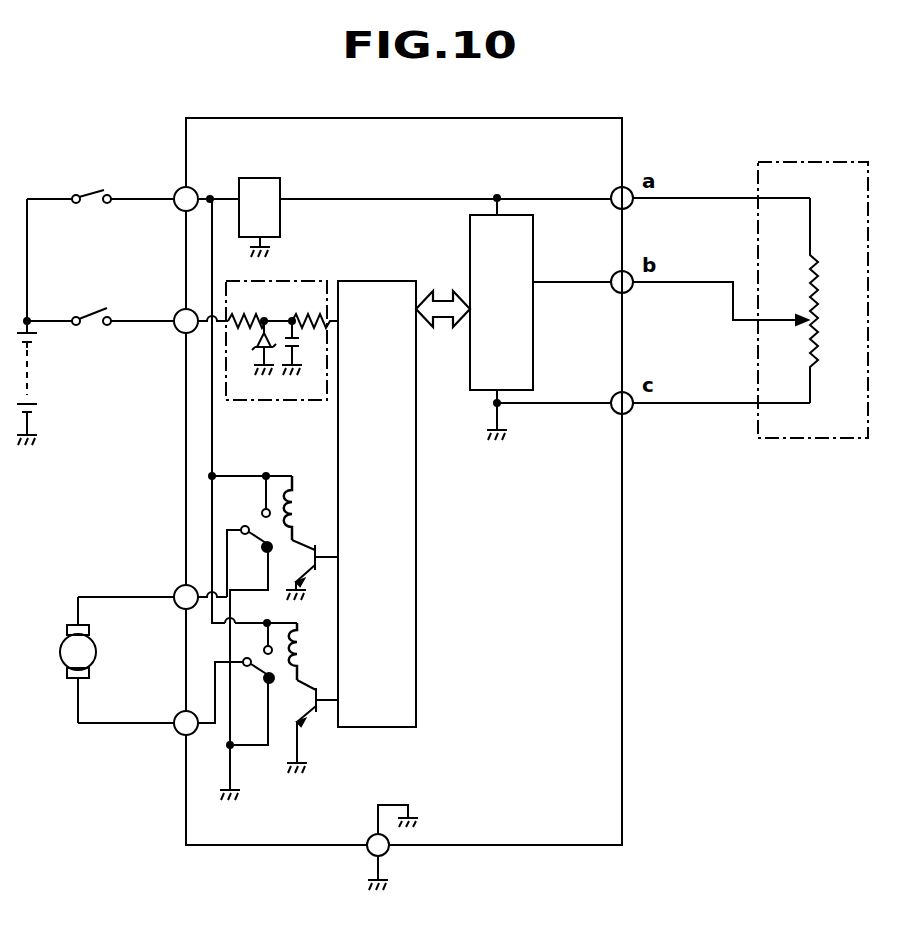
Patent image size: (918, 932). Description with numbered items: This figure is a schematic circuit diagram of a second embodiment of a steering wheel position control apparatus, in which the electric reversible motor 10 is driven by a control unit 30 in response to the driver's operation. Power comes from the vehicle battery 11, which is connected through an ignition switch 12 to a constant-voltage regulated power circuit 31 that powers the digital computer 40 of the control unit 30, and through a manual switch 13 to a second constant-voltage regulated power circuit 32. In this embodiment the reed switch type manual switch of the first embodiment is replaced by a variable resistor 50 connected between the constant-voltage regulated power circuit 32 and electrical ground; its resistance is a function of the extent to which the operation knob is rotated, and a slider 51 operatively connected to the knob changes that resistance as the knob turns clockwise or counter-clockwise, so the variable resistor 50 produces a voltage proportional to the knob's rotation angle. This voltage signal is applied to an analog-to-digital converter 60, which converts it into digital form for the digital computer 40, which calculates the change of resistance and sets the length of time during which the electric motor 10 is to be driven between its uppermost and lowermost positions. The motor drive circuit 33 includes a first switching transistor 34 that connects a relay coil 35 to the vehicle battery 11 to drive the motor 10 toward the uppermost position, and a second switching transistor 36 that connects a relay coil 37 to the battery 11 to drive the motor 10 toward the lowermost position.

The electric reversible motor 10 is at (63, 668).
The vehicle battery 11 is at (37, 378).
The ignition switch 12 is at (97, 312).
The manual switch 13 is at (97, 190).
The control unit 30 is at (421, 116).
The constant-voltage regulated power circuit 31 is at (313, 280).
The constant-voltage regulated power circuit 32 is at (272, 177).
The motor drive circuit 33 is at (265, 473).
The first switching transistor 34 is at (302, 578).
The relay coil 35 is at (300, 500).
The second switching transistor 36 is at (304, 720).
The relay coil 37 is at (302, 648).
The digital computer 40 is at (378, 280).
The variable resistor 50 is at (818, 160).
The slider 51 is at (776, 316).
The analog-to-digital converter 60 is at (534, 333).